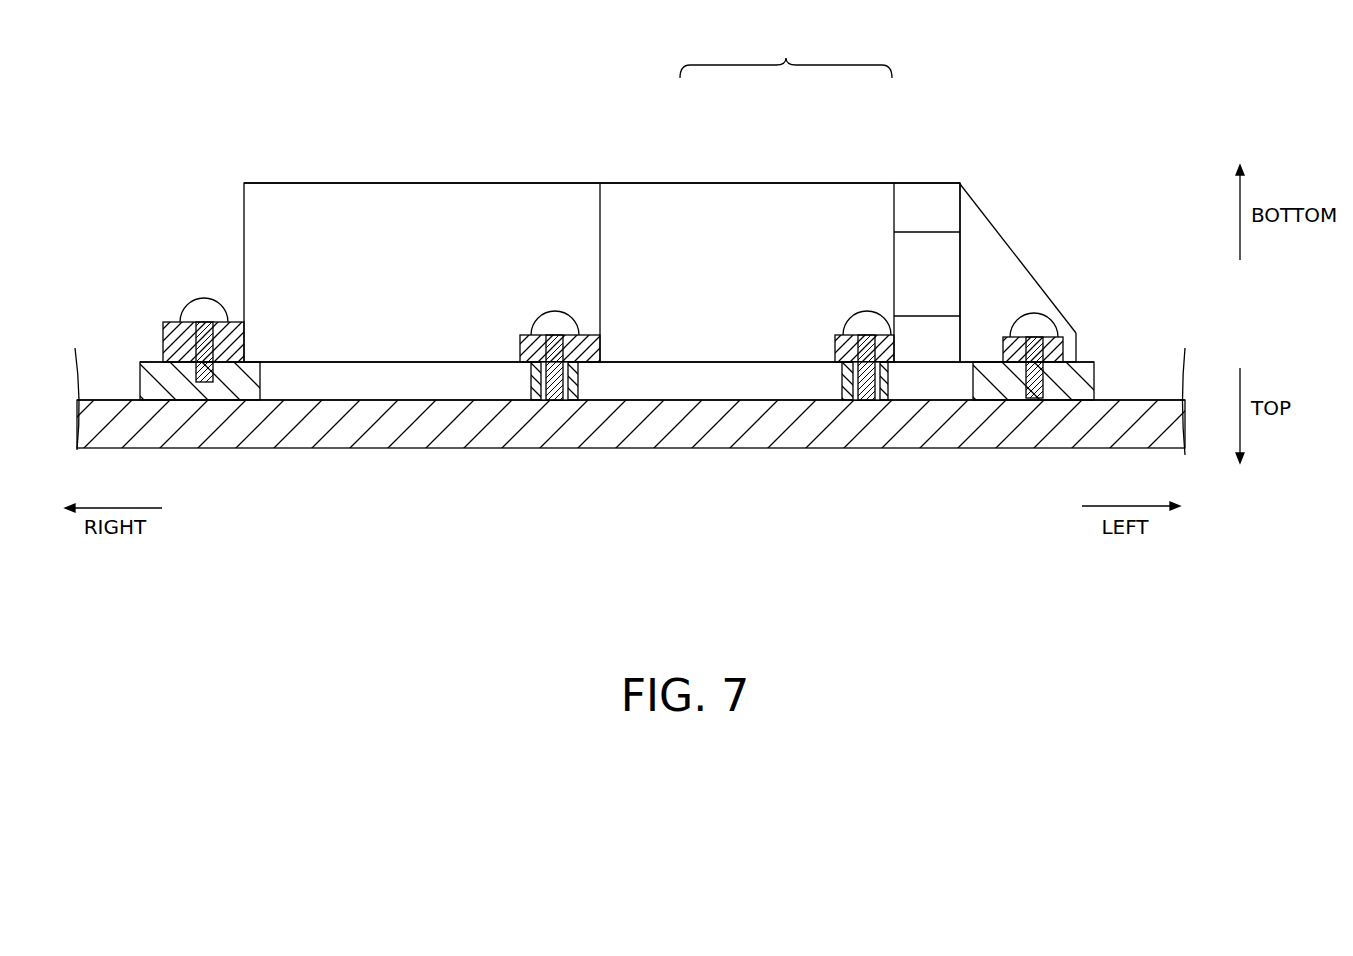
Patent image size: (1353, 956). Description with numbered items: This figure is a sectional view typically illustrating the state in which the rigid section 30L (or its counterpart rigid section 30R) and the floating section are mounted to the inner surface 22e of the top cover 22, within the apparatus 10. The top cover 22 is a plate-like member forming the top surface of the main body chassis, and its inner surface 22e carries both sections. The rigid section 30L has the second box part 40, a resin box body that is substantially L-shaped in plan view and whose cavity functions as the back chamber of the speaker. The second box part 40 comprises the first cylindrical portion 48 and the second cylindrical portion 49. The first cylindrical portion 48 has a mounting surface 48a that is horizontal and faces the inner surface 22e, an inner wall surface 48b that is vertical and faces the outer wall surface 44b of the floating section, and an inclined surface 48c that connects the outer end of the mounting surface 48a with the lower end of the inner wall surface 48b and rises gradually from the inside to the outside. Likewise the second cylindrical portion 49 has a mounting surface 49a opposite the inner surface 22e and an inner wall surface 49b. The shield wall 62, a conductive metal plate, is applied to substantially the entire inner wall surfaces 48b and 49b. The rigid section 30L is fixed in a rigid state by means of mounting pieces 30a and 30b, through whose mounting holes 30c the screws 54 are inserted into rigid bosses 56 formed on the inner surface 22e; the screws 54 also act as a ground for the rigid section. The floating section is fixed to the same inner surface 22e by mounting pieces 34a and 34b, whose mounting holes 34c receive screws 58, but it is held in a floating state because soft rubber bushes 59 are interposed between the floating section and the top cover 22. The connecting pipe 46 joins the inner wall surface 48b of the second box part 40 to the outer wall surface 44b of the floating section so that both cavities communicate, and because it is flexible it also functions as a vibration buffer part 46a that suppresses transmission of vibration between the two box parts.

The vehicle body structure 10 is at (86, 109).
The top cover 22 is at (480, 437).
The inner surface 22e is at (405, 388).
The rigid section 30L is at (617, 220).
The rigid section 30R is at (482, 178).
The mounting piece 30a is at (1062, 360).
The mounting piece 30b is at (167, 322).
The mounting hole 30c is at (231, 375).
The mounting piece 34a is at (837, 350).
The mounting piece 34b is at (588, 335).
The mounting hole 34c is at (533, 378).
The second box part 40 is at (786, 54).
The outer wall surface 44b is at (895, 318).
The connecting pipe 46 is at (869, 274).
The vibration buffer part 46a is at (906, 260).
The first cylindrical portion 48 is at (973, 222).
The mounting surface 48a is at (992, 375).
The inner wall surface 48b is at (950, 345).
The inclined surface 48c is at (1005, 240).
The second cylindrical portion 49 is at (573, 203).
The mounting surface 49a is at (353, 363).
The inner wall surface 49b is at (602, 155).
The screw 54 is at (203, 307).
The rigid boss 56 is at (170, 383).
The screw 58 is at (540, 327).
The rubber bush 59 is at (585, 385).
The shield wall 62 is at (343, 203).